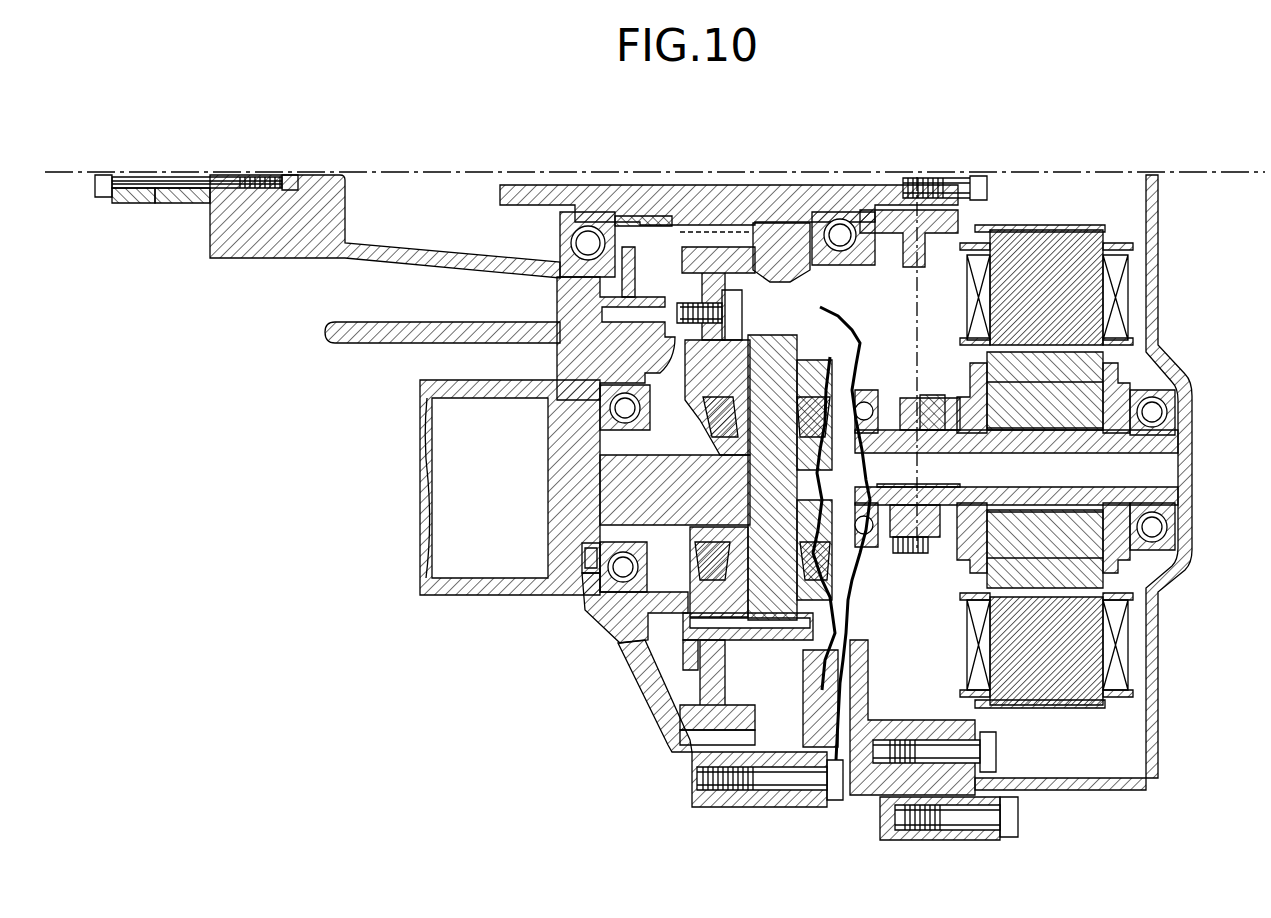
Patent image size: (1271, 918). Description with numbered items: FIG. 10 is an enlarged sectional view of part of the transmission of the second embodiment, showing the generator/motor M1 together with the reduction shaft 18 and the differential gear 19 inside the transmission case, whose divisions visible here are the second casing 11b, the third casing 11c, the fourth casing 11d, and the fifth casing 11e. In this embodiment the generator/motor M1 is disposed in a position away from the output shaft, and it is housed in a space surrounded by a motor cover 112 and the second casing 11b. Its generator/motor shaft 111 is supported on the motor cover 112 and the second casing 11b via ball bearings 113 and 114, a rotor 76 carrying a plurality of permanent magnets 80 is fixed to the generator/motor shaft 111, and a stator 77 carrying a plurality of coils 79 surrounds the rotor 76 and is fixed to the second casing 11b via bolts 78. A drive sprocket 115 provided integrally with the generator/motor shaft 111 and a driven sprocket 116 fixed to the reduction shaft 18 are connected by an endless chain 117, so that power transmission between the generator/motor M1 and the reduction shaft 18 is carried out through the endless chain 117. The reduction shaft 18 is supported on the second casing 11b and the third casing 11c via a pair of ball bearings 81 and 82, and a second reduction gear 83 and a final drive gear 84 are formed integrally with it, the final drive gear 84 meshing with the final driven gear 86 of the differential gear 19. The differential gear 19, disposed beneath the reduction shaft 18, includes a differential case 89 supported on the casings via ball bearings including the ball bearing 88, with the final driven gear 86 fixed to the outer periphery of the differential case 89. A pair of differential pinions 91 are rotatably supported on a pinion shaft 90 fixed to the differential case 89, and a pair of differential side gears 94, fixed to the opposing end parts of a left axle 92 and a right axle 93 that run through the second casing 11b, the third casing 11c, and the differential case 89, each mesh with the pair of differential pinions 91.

The second casing 11b is at (887, 782).
The third casing 11c is at (618, 648).
The fourth casing 11d is at (180, 203).
The fifth casing 11e is at (138, 203).
The reduction shaft 18 is at (722, 197).
The differential gear 19 is at (680, 684).
The rotor 76 is at (1128, 358).
The stator 77 is at (1050, 216).
The bolts 78 is at (992, 749).
The coils 79 is at (967, 270).
The permanent magnets 80 is at (1074, 390).
The ball bearing 81 is at (828, 228).
The ball bearing 82 is at (580, 247).
The second reduction gear 83 is at (567, 355).
The final drive gear 84 is at (650, 214).
The final driven gear 86 is at (745, 268).
The ball bearing 88 is at (600, 595).
The differential case 89 is at (633, 607).
The pinion shaft 90 is at (772, 643).
The differential pinions 91 is at (835, 310).
The left axle 92 is at (490, 592).
The right axle 93 is at (808, 490).
The differential side gears 94 is at (713, 458).
The generator/motor shaft 111 is at (942, 435).
The motor cover 112 is at (1192, 492).
The ball bearing 113 is at (1160, 412).
The ball bearing 114 is at (868, 402).
The drive sprocket 115 is at (928, 395).
The driven sprocket 116 is at (903, 264).
The endless chain 117 is at (910, 554).
The generator/motor M1 is at (1118, 235).